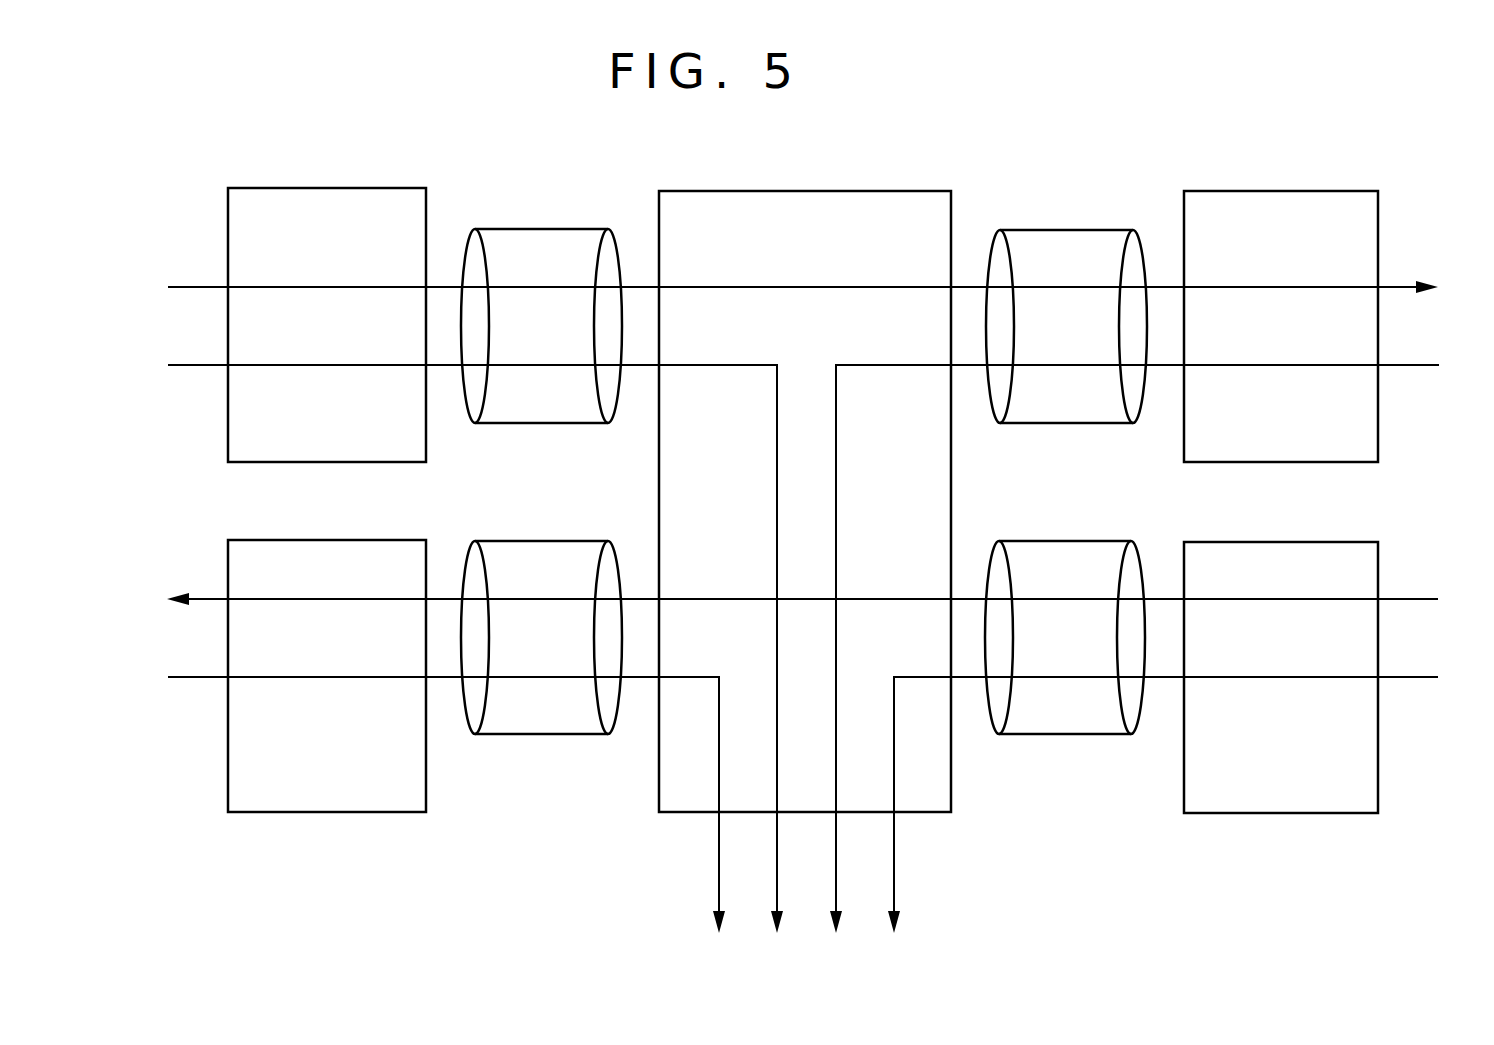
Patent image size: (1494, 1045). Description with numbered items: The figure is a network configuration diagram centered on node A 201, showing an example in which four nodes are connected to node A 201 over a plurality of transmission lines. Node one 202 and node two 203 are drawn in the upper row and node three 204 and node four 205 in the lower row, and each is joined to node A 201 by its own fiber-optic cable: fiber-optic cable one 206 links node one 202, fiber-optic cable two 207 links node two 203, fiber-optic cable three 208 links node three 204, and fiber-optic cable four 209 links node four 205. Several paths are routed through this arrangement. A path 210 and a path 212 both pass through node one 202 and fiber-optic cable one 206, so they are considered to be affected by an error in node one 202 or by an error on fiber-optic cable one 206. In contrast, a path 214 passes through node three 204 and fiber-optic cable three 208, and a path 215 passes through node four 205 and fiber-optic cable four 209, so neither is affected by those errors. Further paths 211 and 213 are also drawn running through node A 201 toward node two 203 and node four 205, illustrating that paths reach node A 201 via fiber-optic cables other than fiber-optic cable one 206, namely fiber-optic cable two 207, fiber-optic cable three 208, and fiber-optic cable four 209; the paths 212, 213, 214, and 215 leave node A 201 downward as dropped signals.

The Node A 201 is at (860, 186).
The Node 1 202 is at (342, 187).
The Node 2 203 is at (1292, 187).
The Node 3 204 is at (357, 538).
The Node 4 205 is at (1305, 540).
The fiber-optic cable 1 206 is at (608, 228).
The fiber-optic cable 2 207 is at (1133, 229).
The fiber-optic cable 3 208 is at (608, 540).
The fiber-optic cable 4 209 is at (1131, 541).
The path 210 is at (1392, 291).
The input line from Node 4 211 is at (1398, 601).
The path 212 is at (736, 365).
The dropped line 213 is at (898, 365).
The path 214 is at (719, 881).
The path 215 is at (894, 886).